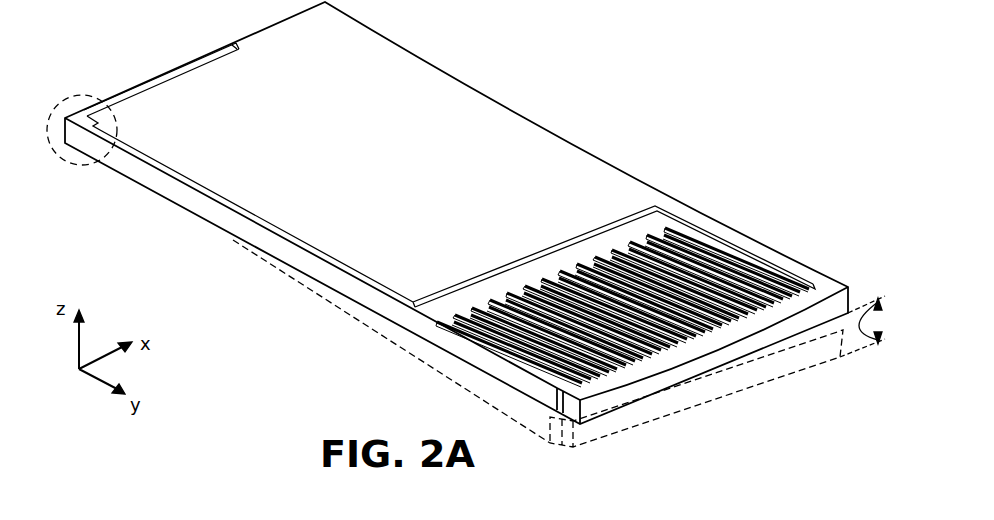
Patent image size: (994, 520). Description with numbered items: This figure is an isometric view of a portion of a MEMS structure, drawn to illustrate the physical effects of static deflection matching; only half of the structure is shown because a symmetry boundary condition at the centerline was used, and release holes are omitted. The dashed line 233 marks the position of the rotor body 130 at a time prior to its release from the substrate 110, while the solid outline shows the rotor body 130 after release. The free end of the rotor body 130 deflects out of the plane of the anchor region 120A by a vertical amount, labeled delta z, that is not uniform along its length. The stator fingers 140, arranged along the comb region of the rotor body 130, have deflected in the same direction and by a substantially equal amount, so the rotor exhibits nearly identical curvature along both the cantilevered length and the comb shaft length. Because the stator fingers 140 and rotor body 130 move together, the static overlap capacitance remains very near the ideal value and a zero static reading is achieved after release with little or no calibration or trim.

The substrate 110 is at (249, 300).
The anchor region 120A is at (54, 97).
The rotor body 130 is at (803, 273).
The stator fingers 140 is at (714, 250).
The dashed line 233 is at (746, 390).